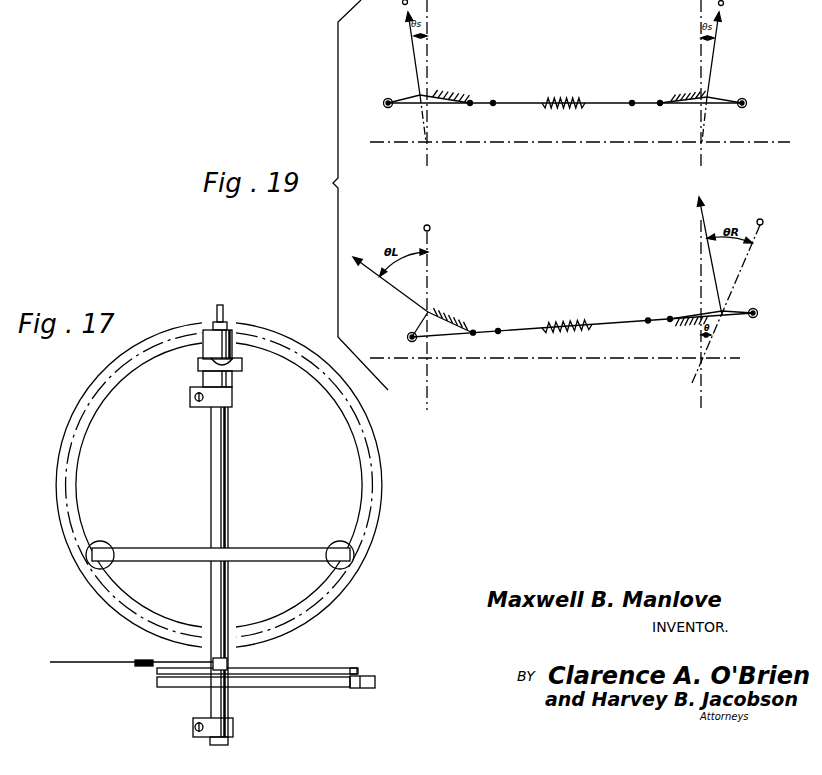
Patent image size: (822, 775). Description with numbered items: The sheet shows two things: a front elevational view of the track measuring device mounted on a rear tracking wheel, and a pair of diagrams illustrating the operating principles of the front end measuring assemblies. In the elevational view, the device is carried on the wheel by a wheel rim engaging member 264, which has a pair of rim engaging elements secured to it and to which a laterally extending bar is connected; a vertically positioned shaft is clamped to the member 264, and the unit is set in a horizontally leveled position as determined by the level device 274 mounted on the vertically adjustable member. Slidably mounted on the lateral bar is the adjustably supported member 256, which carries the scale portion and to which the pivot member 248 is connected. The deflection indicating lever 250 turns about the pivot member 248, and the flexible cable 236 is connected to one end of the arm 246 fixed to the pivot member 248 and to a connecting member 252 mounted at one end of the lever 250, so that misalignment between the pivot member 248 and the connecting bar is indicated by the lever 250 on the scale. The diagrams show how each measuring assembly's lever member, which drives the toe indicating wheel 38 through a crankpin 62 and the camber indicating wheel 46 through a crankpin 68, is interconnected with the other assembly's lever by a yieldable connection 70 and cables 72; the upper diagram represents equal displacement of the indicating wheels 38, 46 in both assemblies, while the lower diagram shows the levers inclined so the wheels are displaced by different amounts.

In FIG. 19, the toe indicating wheel 38 is at (481, 13).
In FIG. 19, the camber indicating wheel 46 is at (420, 77).
In FIG. 19, the crankpin 62 is at (363, 35).
In FIG. 19, the crankpin 68 is at (400, 101).
In FIG. 19, the yieldable connection 70 is at (561, 99).
In FIG. 19, the cables 72 is at (518, 102).
In FIG. 17, the flexible cable 236 is at (73, 661).
In FIG. 17, the arm 246 is at (152, 661).
In FIG. 17, the pivot member 248 is at (233, 661).
In FIG. 17, the deflection indicating lever 250 is at (308, 671).
In FIG. 17, the connecting member 252 is at (155, 669).
In FIG. 17, the adjustably supported member 256 is at (202, 692).
In FIG. 17, the wheel rim engaging member 264 is at (232, 565).
In FIG. 17, the level device 274 is at (242, 360).